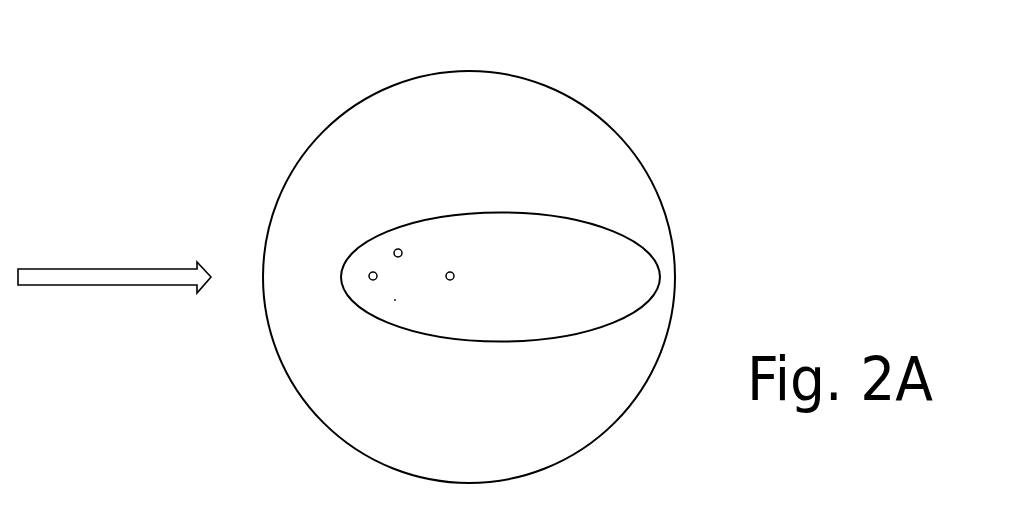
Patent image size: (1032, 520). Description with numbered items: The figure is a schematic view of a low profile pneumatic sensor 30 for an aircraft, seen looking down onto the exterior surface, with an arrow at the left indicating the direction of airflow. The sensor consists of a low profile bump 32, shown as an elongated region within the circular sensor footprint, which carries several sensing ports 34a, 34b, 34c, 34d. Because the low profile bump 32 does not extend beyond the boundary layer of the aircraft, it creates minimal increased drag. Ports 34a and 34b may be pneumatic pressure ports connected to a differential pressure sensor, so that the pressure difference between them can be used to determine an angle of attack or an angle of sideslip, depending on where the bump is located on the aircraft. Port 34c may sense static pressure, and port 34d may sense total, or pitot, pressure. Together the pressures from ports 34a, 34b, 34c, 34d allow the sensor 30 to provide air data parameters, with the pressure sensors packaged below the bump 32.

The low profile pneumatic sensor 30 is at (280, 82).
The low profile bump 32 is at (580, 286).
The sensing port 34a is at (400, 248).
The sensing port 34b is at (395, 300).
The sensing port 34c is at (369, 277).
The sensing port 34d is at (455, 273).